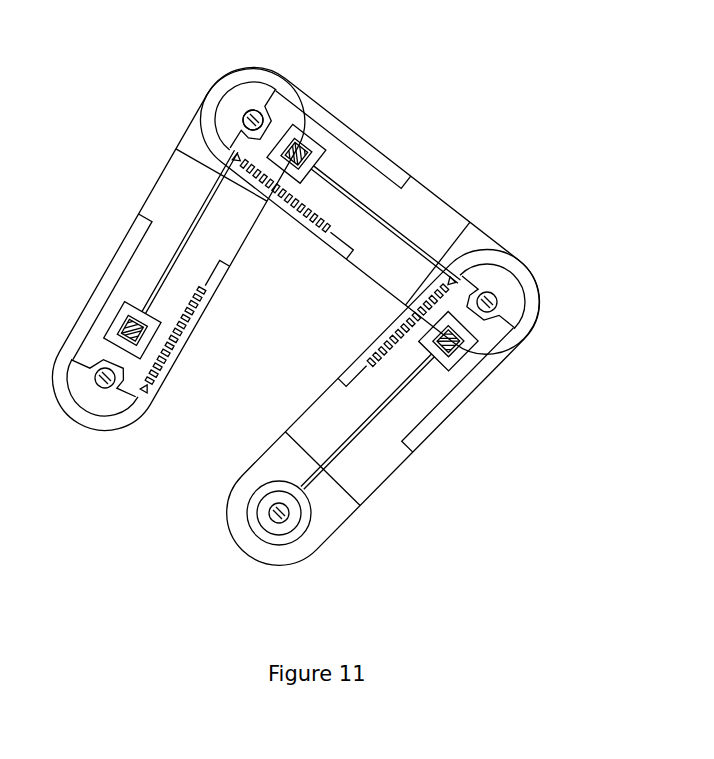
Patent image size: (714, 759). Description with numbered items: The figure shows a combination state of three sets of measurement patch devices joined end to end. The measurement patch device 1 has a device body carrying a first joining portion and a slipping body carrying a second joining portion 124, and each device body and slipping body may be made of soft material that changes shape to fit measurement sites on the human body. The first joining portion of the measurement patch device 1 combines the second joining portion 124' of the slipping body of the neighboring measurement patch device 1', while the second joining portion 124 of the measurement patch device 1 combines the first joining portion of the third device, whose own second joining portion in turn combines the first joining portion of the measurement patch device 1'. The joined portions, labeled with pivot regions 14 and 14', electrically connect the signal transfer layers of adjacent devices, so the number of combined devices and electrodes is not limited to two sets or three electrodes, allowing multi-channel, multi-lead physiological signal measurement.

The measurement patch device 1 is at (369, 210).
The measurement patch device 1' is at (178, 250).
The second joining portion 124' is at (278, 81).
The second joining portion 124 is at (547, 283).
The pivot connecting portion 14 is at (253, 120).
The pivot connecting portion 14' is at (97, 420).